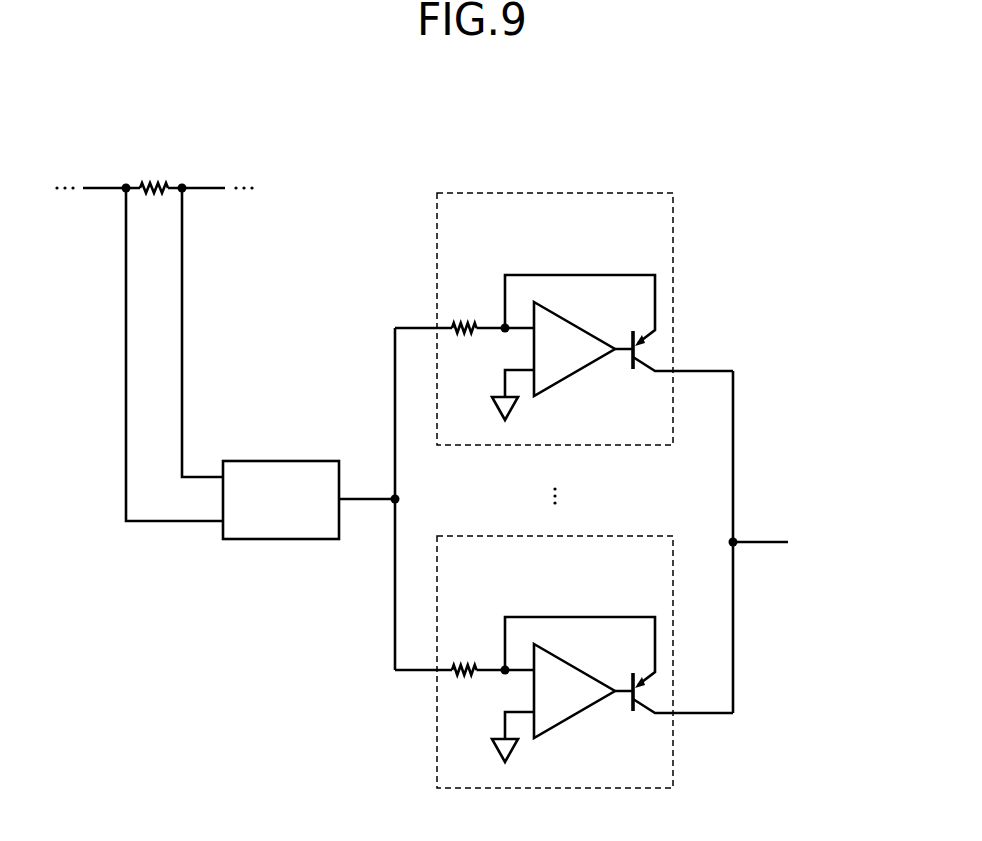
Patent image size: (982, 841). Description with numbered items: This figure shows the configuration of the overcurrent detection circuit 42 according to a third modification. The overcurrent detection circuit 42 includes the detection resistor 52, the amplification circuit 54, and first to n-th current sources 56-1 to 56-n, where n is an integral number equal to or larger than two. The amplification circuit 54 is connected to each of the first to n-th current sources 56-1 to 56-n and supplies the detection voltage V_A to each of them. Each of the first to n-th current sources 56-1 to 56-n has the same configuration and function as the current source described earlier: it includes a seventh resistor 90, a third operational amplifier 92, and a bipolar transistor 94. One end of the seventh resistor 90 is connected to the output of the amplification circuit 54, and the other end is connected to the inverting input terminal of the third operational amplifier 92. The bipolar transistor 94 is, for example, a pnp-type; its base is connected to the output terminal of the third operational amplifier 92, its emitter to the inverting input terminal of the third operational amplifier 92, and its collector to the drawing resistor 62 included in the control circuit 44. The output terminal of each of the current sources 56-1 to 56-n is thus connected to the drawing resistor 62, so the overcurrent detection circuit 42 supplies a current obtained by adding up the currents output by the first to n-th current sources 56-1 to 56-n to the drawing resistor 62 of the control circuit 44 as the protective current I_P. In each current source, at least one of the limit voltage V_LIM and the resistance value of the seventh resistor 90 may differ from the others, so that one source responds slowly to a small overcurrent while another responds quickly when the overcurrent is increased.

The detection resistor 52 is at (160, 181).
The amplification circuit 54 is at (278, 460).
The overcurrent detection circuit 42 is at (461, 166).
The first current source 56-1 is at (636, 193).
The n-th current source 56-n is at (640, 537).
The seventh resistor 90 is at (463, 319).
The third operational amplifier 92 is at (569, 319).
The bipolar transistor 94 is at (638, 364).
The control circuit 44 is at (799, 542).
The drawing resistor 62 is at (799, 542).